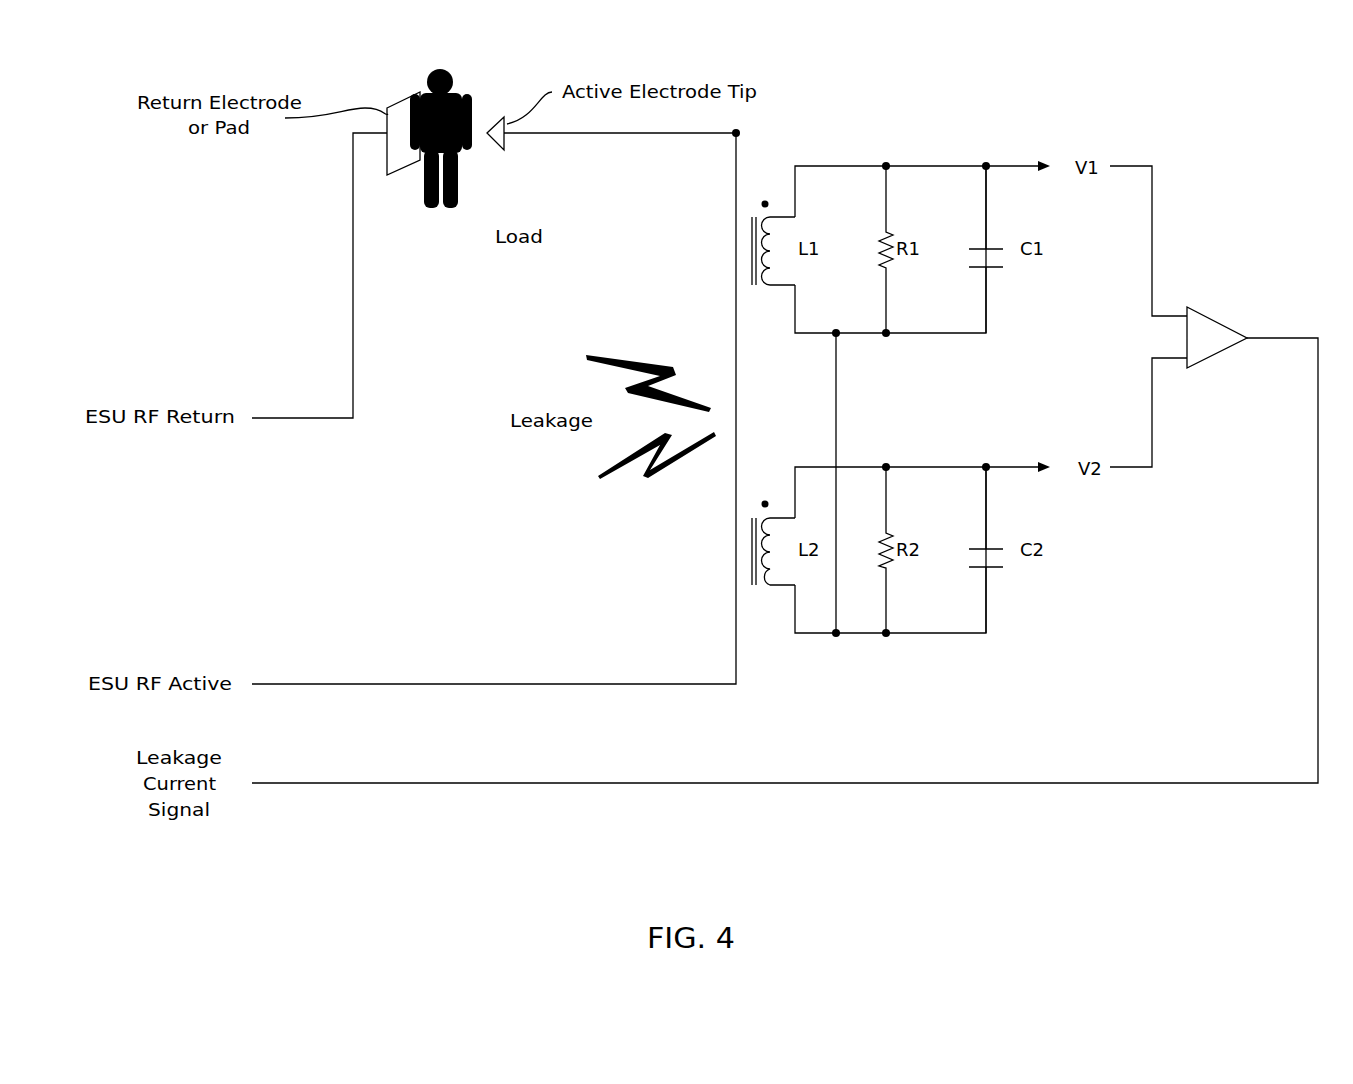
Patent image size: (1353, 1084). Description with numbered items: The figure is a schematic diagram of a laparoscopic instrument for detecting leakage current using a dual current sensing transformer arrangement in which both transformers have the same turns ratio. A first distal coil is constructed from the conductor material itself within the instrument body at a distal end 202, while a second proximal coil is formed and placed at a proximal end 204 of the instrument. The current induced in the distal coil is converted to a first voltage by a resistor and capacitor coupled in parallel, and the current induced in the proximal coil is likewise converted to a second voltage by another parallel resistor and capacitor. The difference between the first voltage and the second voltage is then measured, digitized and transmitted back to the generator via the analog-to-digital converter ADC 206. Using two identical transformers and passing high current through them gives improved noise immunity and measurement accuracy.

The distal end 202 is at (762, 128).
The proximal end 204 is at (750, 687).
The analog-to-digital converter ADC 206 is at (1210, 318).